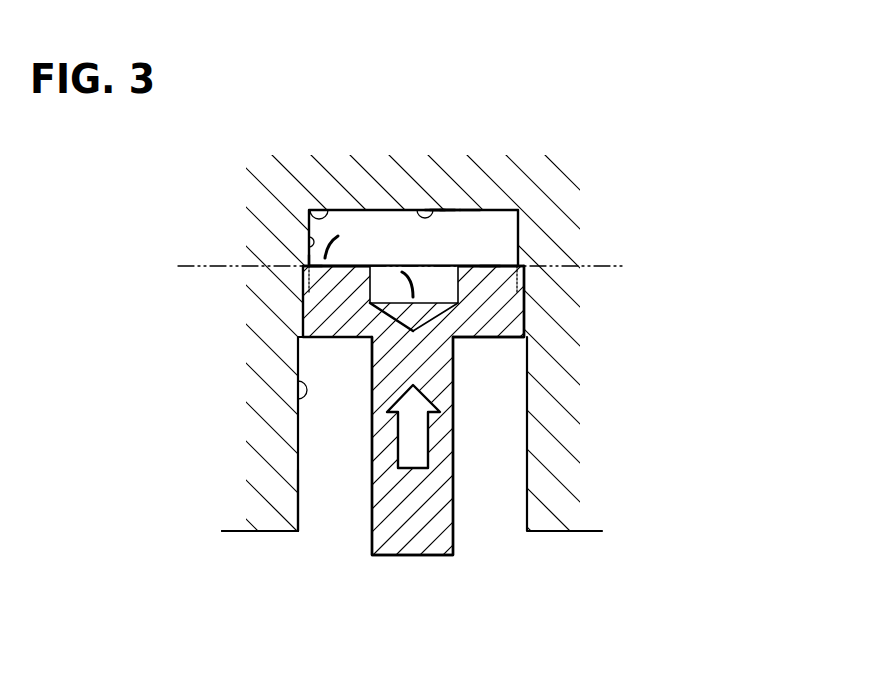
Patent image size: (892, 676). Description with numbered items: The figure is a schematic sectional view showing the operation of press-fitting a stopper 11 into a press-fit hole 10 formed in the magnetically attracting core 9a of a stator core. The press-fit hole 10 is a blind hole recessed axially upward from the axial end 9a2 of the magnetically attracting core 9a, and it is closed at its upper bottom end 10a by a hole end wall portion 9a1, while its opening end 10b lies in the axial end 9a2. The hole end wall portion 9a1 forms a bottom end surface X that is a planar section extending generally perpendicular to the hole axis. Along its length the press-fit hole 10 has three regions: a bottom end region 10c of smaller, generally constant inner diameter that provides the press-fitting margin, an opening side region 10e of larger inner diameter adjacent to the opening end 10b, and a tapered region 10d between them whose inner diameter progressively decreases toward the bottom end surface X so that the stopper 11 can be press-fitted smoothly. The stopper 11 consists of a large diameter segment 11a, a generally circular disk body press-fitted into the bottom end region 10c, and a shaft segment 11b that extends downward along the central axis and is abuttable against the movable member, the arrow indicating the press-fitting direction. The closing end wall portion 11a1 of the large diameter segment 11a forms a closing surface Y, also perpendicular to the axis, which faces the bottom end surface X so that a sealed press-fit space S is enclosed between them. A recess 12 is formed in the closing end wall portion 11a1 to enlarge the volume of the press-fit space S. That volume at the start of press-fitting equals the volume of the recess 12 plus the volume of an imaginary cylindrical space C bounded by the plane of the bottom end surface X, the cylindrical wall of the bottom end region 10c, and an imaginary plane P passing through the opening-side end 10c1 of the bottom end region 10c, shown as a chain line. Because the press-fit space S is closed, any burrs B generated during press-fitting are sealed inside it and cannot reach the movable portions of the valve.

The magnetically attracting core 9a is at (268, 531).
The hole end wall portion 9a1 is at (449, 233).
The axial end 9a2 is at (226, 531).
The press-fit hole 10 is at (298, 402).
The bottom end 10a is at (309, 222).
The opening end 10b is at (528, 532).
The bottom end region 10c is at (308, 243).
The opening-side end 10c1 is at (319, 263).
The tapered region 10d is at (302, 307).
The opening side region 10e is at (299, 472).
The stopper 11 is at (662, 337).
The large diameter segment 11a is at (488, 338).
The closing end wall portion 11a1 is at (472, 266).
The shaft segment 11b is at (454, 420).
The recess 12 is at (383, 287).
The burrs B is at (408, 265).
The imaginary cylindrical space C is at (433, 232).
The press-fit space S is at (440, 210).
The bottom end surface X is at (467, 210).
The closing surface Y is at (492, 265).
The imaginary plane P is at (635, 268).